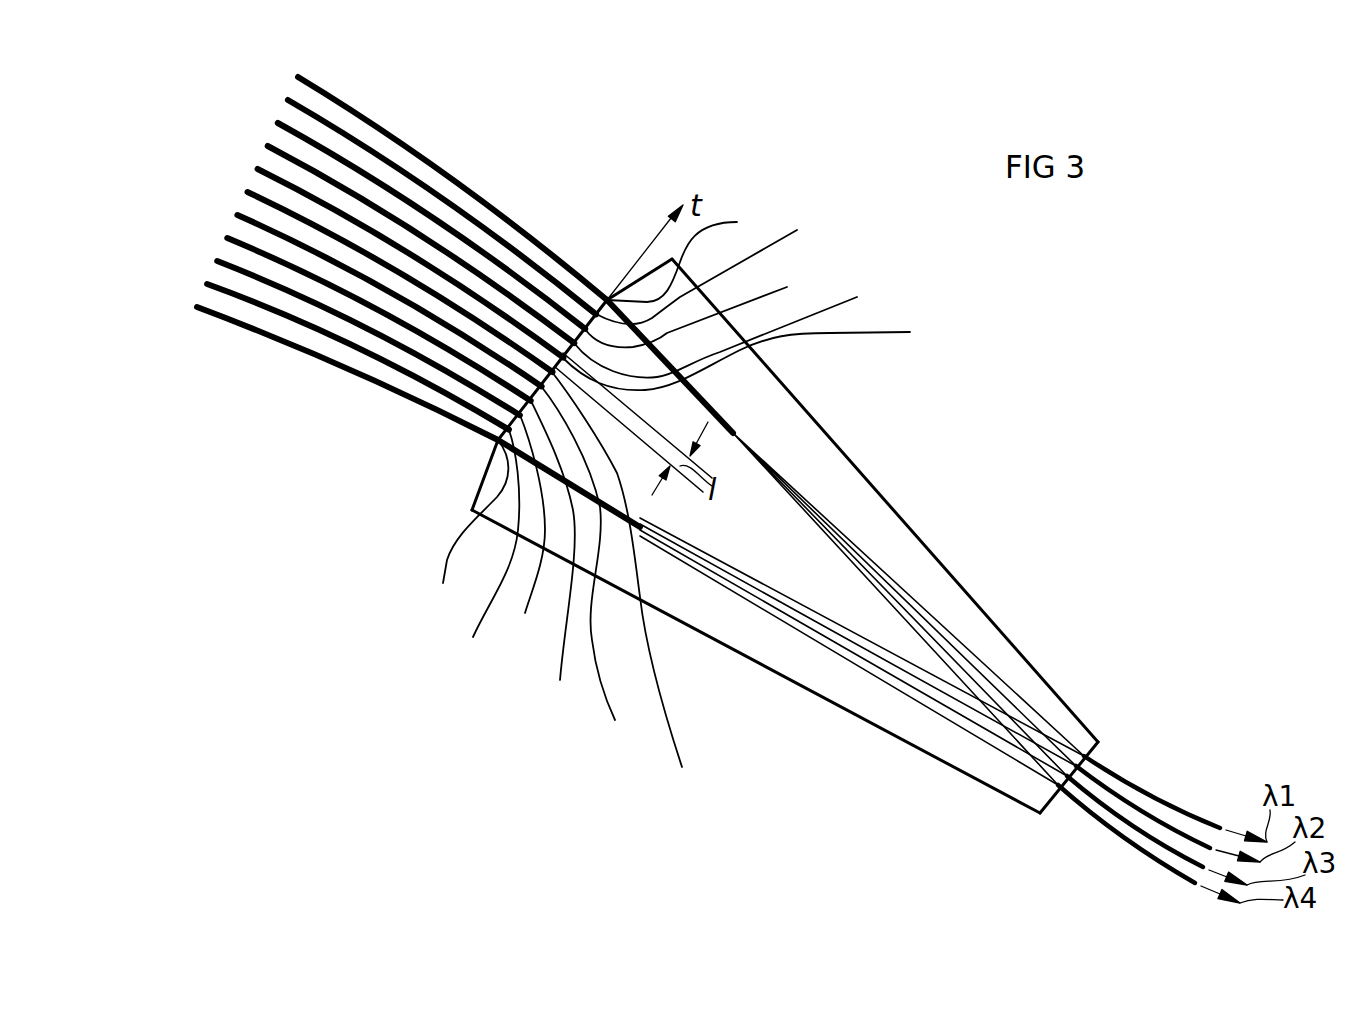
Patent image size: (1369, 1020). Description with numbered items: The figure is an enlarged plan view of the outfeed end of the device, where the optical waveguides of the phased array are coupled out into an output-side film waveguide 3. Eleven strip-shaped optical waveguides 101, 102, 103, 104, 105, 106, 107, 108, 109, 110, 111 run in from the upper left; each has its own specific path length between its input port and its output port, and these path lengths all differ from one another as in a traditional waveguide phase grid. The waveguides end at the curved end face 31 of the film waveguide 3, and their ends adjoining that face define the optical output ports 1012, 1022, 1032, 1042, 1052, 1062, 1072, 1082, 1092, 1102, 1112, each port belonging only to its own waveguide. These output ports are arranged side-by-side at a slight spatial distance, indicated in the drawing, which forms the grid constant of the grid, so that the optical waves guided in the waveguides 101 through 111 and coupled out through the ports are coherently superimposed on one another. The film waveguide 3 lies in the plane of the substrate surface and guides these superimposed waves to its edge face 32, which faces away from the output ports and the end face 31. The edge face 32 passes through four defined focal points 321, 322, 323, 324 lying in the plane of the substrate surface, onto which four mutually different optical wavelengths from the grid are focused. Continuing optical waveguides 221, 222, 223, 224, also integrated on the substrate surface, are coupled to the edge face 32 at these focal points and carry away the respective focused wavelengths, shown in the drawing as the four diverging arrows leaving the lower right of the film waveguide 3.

The film waveguide 3 is at (895, 487).
The end face 31 is at (485, 473).
The edge face 32 is at (1093, 753).
The focal point 321 is at (1066, 762).
The focal point 322 is at (1083, 757).
The focal point 323 is at (1062, 780).
The focal point 324 is at (1067, 787).
The optical waveguide 101 is at (227, 317).
The optical waveguide 102 is at (301, 322).
The optical waveguide 103 is at (371, 331).
The optical waveguide 104 is at (437, 342).
The optical waveguide 105 is at (495, 352).
The optical waveguide 106 is at (497, 332).
The optical waveguide 107 is at (458, 285).
The optical waveguide 108 is at (423, 237).
The optical waveguide 109 is at (393, 192).
The optical waveguide 110 is at (362, 145).
The optical waveguide 111 is at (338, 104).
The optical output port 1012 is at (460, 536).
The optical output port 1022 is at (478, 559).
The optical output port 1032 is at (527, 538).
The optical output port 1042 is at (561, 563).
The optical output port 1052 is at (596, 578).
The optical output port 1062 is at (641, 594).
The optical output port 1072 is at (767, 353).
The optical output port 1082 is at (747, 329).
The optical output port 1092 is at (716, 305).
The optical output port 1102 is at (730, 265).
The optical output port 1112 is at (701, 247).
The continuing optical waveguide 221 is at (1137, 790).
The continuing optical waveguide 222 is at (1167, 826).
The continuing optical waveguide 223 is at (1127, 828).
The continuing optical waveguide 224 is at (1080, 807).